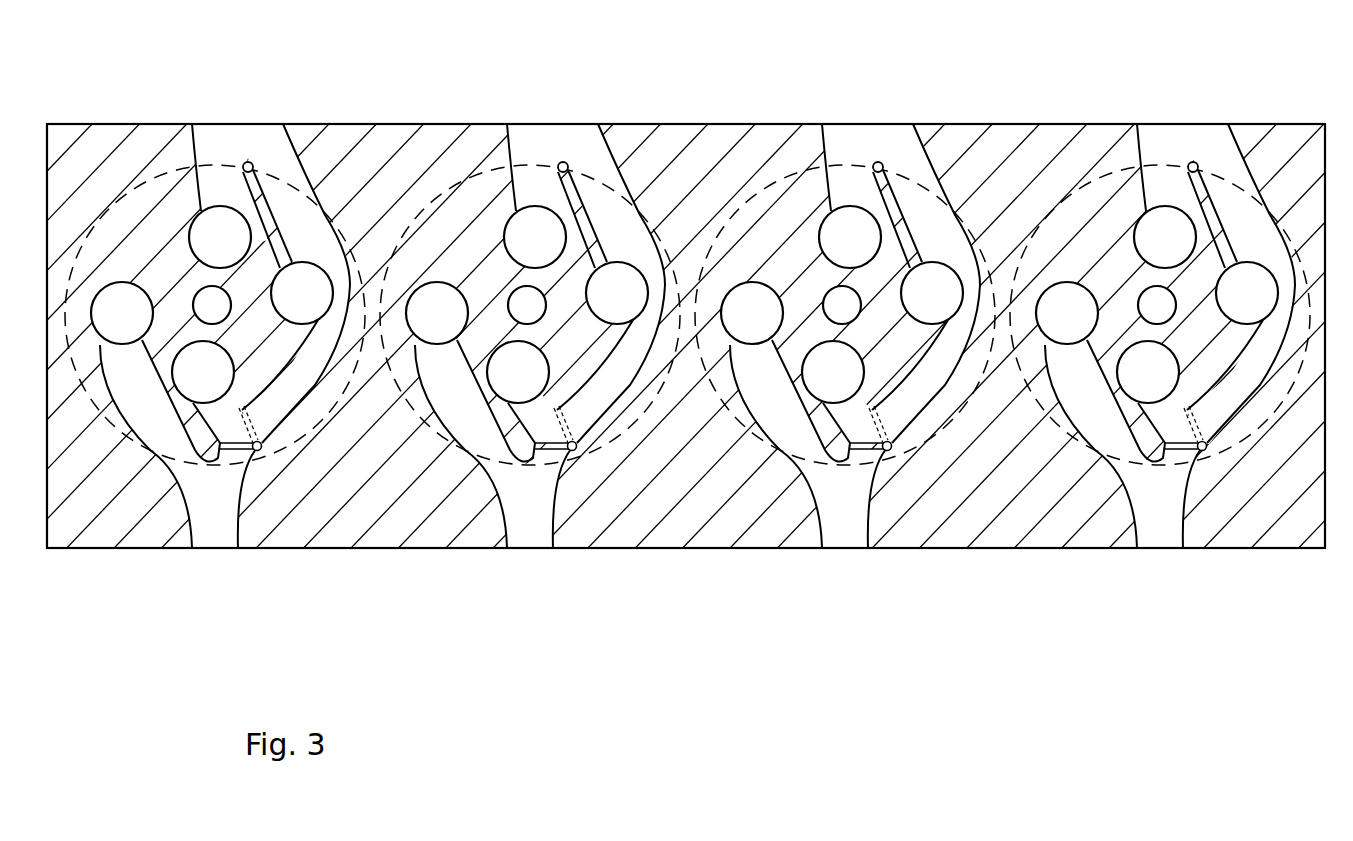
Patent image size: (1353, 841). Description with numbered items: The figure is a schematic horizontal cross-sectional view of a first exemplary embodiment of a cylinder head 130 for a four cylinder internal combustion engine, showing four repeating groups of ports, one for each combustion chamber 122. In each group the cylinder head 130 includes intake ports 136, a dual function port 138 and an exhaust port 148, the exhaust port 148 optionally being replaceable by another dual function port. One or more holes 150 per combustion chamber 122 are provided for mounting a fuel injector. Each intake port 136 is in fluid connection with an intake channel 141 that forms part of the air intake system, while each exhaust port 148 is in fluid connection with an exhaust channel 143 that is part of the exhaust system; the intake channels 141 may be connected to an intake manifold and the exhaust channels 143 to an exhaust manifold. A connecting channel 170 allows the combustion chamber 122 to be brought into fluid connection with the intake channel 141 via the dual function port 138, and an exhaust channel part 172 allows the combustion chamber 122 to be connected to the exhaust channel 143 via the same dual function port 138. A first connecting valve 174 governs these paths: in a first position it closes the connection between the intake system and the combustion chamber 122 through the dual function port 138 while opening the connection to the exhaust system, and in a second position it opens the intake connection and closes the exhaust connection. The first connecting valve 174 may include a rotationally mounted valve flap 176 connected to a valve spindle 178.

The cylinder head 130 is at (948, 94).
The combustion chamber 122 is at (164, 172).
The hole 150 is at (196, 294).
The intake channel 141 is at (226, 151).
The intake port 136 is at (203, 249).
The exhaust port 148 is at (105, 325).
The dual function port 138 is at (186, 384).
The exhaust channel 143 is at (196, 539).
The exhaust channel part 172 is at (130, 444).
The valve flap 176 is at (232, 451).
The first connecting valve 174 is at (240, 460).
The valve spindle 178 is at (261, 449).
The connecting channel 170 is at (276, 404).